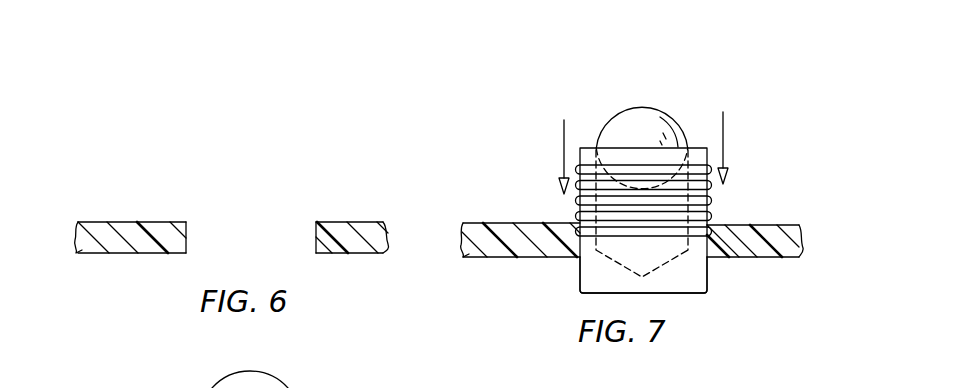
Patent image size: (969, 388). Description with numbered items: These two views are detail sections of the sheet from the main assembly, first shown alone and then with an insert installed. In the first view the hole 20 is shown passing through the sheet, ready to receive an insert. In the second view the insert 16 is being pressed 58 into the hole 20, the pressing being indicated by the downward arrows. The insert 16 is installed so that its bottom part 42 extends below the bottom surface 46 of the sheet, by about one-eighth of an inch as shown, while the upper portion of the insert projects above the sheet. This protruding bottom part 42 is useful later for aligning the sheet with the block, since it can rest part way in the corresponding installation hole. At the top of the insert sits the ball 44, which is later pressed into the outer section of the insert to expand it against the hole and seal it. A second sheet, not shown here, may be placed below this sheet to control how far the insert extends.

In FIG. 6, the hole 20 is at (195, 222).
In FIG. 7, the insert 16 is at (733, 184).
In FIG. 7, the bottom surface 46 is at (579, 211).
In FIG. 7, the bottom part 42 is at (579, 277).
In FIG. 7, the ball 44 is at (642, 107).
In FIG. 7, the pressing of the insert 58 is at (563, 153).